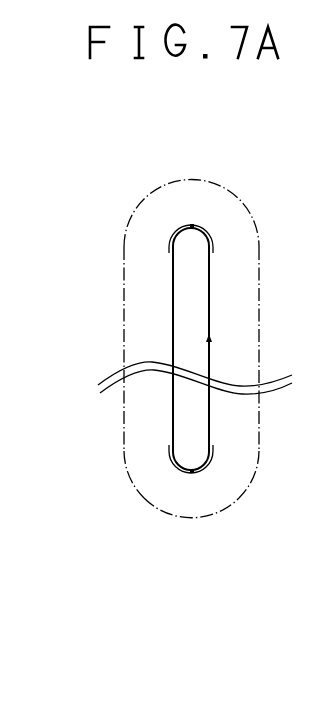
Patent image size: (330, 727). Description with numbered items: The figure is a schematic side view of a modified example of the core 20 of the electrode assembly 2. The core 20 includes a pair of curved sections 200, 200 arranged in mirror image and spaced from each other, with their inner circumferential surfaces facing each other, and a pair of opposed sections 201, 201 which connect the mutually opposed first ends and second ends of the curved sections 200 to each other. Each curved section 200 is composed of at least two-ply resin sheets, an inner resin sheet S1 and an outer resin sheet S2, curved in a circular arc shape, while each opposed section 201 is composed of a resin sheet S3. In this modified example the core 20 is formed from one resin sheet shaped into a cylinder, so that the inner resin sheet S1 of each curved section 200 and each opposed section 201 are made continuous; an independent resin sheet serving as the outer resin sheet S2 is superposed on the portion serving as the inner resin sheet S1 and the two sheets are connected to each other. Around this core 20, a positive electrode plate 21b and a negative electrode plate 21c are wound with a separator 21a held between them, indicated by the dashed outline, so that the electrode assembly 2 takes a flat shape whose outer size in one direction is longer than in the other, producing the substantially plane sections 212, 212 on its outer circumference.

The electrode assembly 2 is at (267, 251).
The core 20 is at (222, 227).
The curved section 200 is at (125, 352).
The inner resin sheet S1 is at (175, 241).
The outer resin sheet S2 is at (171, 232).
The resin sheet S3 is at (209, 407).
The opposed section 201 is at (173, 407).
The substantially plane section 212 is at (123, 338).
The separator 21a is at (190, 503).
The positive electrode plate 21b is at (134, 474).
The negative electrode plate 21c is at (249, 474).